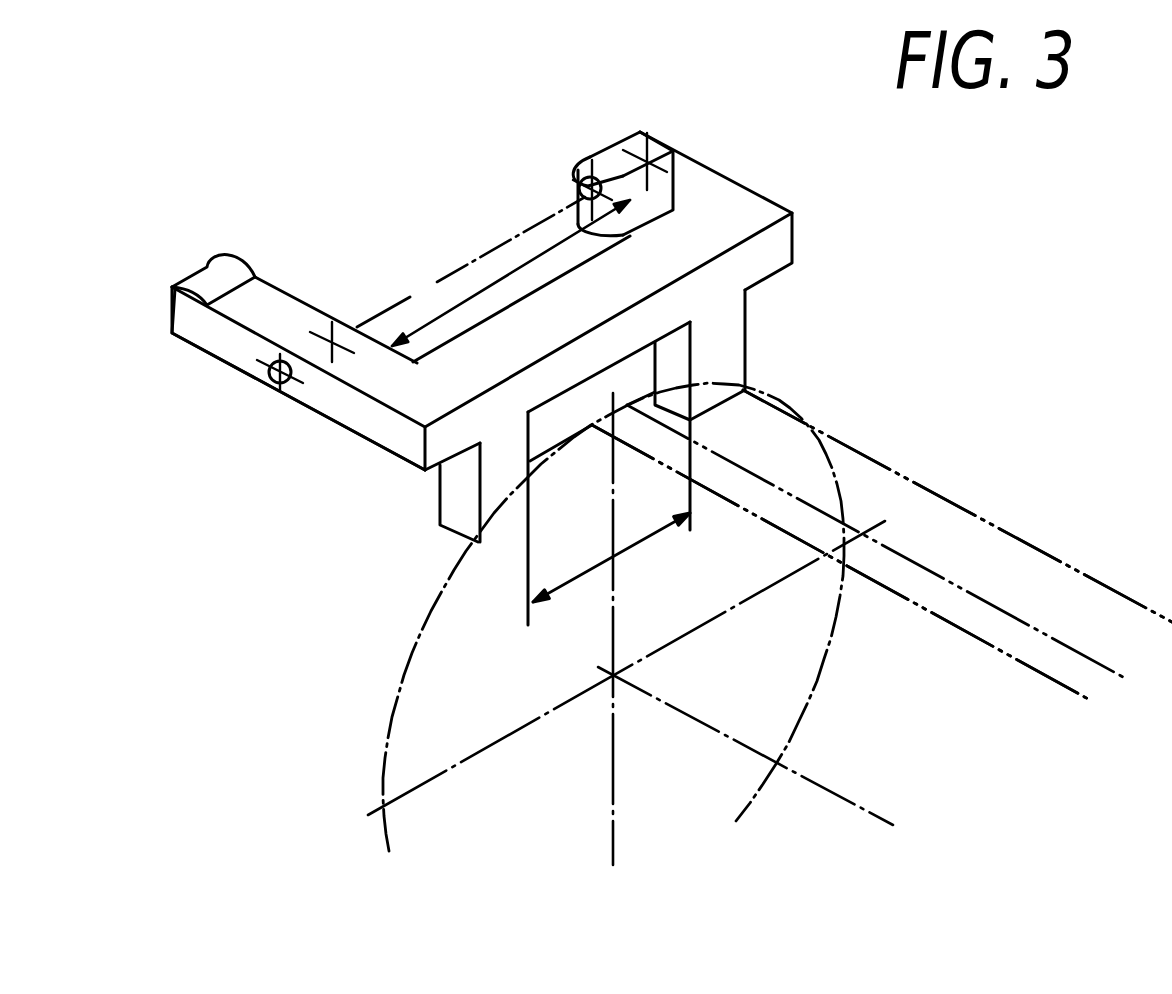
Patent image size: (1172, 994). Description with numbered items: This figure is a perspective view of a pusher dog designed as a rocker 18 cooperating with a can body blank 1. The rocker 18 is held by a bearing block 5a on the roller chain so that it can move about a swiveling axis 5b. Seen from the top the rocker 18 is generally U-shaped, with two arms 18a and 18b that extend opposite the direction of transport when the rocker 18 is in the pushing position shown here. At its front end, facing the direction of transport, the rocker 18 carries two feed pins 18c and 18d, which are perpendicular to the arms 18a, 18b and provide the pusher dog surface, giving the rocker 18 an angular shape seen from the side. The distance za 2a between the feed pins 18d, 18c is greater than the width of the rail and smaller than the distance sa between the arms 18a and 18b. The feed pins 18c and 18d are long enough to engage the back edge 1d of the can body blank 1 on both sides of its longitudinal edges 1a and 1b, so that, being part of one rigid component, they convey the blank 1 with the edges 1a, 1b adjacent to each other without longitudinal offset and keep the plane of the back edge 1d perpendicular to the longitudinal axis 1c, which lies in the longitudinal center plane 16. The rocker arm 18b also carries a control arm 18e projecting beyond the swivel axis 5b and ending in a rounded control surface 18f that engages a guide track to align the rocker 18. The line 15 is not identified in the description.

The rocker 18 is at (548, 140).
The arm 18a is at (680, 172).
The arm 18b is at (362, 372).
The feed pin 18c is at (728, 340).
The feed pin 18d is at (493, 463).
The control arm 18e is at (222, 347).
The control surface 18f is at (213, 275).
The bearing block 5a is at (511, 281).
The swiveling axis 5b is at (407, 300).
The distance between feed pins 2a is at (609, 473).
The can body blank 1 is at (966, 473).
The longitudinal edge 1a is at (980, 597).
The longitudinal edge 1b is at (987, 643).
The longitudinal axis 1c is at (827, 790).
The back edge 1d is at (418, 638).
The longitudinal centre line 15 is at (498, 738).
The longitudinal center plane 16 is at (615, 750).